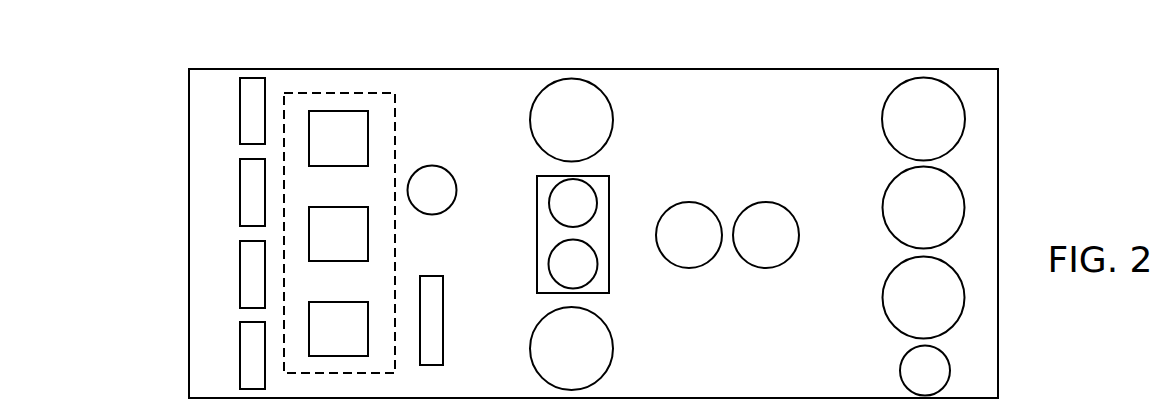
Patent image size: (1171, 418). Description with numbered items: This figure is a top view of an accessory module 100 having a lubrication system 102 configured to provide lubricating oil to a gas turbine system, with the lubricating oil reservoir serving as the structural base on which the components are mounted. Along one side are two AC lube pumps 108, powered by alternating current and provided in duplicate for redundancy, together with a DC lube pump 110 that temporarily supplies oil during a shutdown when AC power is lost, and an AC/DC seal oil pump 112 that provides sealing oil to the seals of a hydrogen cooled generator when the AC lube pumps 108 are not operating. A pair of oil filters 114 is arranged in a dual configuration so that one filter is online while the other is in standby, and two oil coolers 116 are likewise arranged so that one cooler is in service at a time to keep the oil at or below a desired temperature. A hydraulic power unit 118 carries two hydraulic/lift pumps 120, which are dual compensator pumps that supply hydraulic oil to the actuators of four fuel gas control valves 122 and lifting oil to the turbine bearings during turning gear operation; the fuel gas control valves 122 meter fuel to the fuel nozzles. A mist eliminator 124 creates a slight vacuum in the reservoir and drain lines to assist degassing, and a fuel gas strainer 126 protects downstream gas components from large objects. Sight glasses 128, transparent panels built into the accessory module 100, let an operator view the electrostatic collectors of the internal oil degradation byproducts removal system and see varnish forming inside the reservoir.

The accessory module 100 is at (1052, 156).
The lubrication system 102 is at (584, 69).
The AC lube pumps 108 is at (898, 138).
The DC lube pump 110 is at (898, 298).
The AC/DC seal oil pump 112 is at (910, 370).
The oil filters 114 is at (700, 247).
The oil coolers 116 is at (602, 120).
The hydraulic power unit 118 is at (610, 227).
The hydraulic/lift pumps 120 is at (562, 213).
The fuel gas control valves 122 is at (250, 112).
The mist eliminator 124 is at (430, 190).
The fuel gas strainer 126 is at (430, 327).
The sight glasses 128 is at (340, 417).